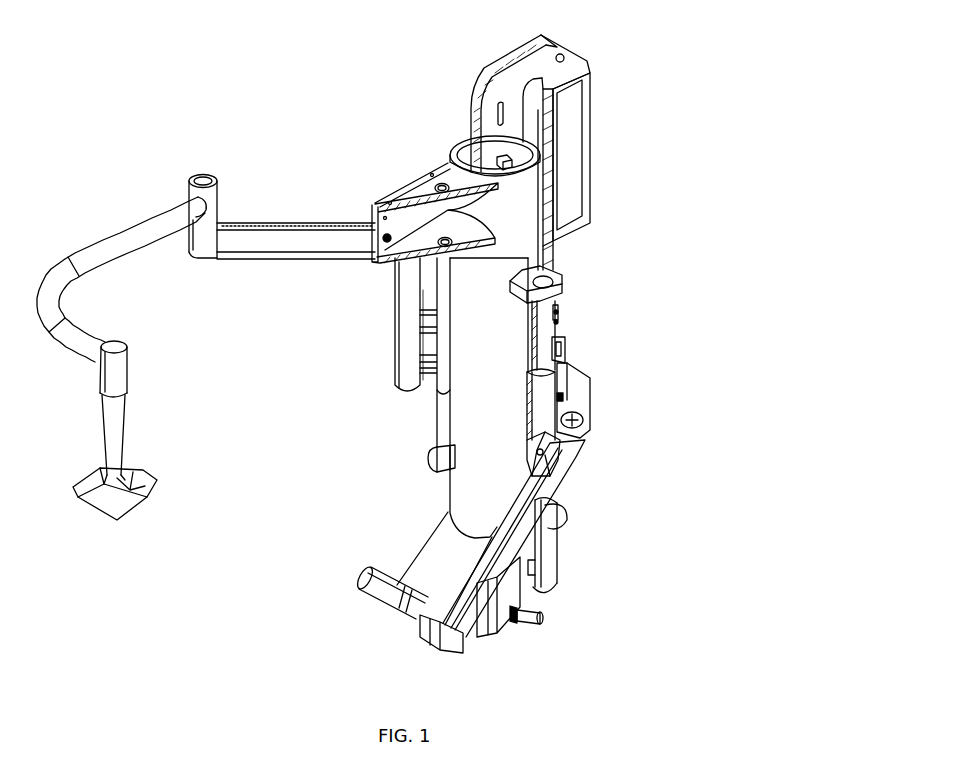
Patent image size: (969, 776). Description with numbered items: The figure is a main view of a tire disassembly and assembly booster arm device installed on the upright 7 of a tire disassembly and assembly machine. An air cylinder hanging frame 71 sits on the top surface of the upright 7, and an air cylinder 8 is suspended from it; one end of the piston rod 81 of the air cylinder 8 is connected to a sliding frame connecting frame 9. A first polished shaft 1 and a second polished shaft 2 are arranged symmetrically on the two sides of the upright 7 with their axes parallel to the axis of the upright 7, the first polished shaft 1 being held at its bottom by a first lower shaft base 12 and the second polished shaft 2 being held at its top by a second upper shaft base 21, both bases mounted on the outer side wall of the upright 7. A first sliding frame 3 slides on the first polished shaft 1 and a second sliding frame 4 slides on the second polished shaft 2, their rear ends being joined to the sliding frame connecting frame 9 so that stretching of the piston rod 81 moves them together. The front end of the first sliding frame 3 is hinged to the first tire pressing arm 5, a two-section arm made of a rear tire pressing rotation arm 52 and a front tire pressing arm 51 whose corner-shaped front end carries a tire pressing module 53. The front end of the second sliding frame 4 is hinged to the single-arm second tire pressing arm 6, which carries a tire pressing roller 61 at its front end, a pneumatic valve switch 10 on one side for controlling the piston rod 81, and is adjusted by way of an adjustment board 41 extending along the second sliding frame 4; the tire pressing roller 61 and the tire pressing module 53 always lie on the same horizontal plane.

The first polished shaft 1 is at (445, 280).
The second polished shaft 2 is at (540, 345).
The first sliding frame 3 is at (438, 355).
The second sliding frame 4 is at (590, 423).
The first tire pressing arm 5 is at (247, 227).
The second tire pressing arm 6 is at (563, 523).
The upright 7 is at (492, 453).
The air cylinder 8 is at (566, 148).
The sliding frame connecting frame 9 is at (558, 325).
The pneumatic valve switch 10 is at (540, 607).
The first lower shaft base 12 is at (427, 460).
The second upper shaft base 21 is at (563, 280).
The adjustment board 41 is at (547, 440).
The front tire pressing arm 51 is at (143, 233).
The rear tire pressing rotation arm 52 is at (325, 225).
The tire pressing module 53 is at (110, 493).
The tire pressing roller 61 is at (398, 603).
The air cylinder hanging frame 71 is at (483, 133).
The piston rod 81 is at (555, 257).